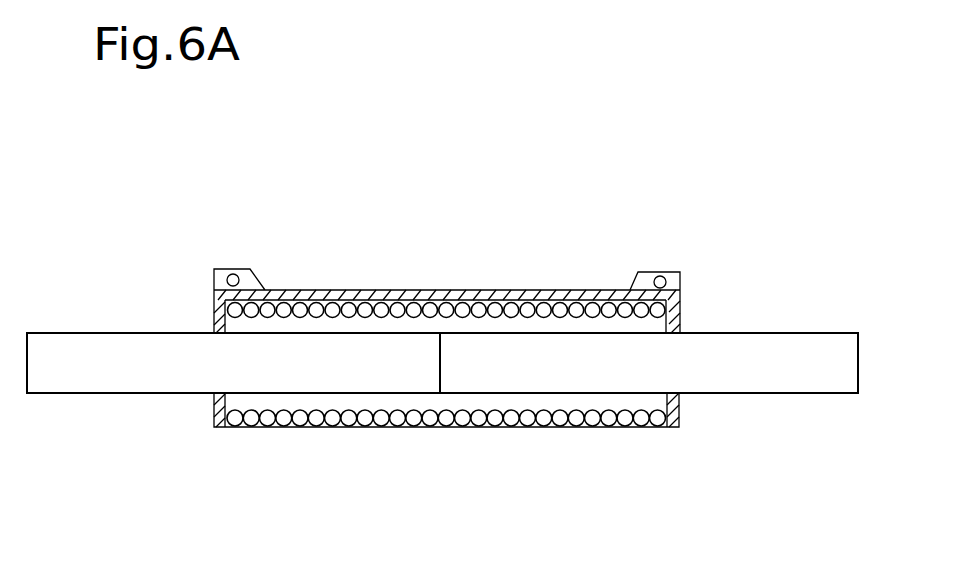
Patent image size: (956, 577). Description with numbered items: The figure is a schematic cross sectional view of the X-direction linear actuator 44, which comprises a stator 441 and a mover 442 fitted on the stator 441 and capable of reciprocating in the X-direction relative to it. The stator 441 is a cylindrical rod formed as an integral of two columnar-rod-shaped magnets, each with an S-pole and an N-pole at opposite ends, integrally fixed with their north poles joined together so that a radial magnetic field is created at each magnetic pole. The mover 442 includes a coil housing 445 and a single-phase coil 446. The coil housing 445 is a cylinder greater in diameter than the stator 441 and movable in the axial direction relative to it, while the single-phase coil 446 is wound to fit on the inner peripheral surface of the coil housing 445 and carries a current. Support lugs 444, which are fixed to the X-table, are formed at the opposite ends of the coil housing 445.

The X-direction linear actuator 44 is at (432, 336).
The stator 441 is at (783, 393).
The mover 442 is at (213, 428).
The support lug 444 is at (242, 270).
The coil housing 445 is at (330, 292).
The single-phase coil 446 is at (483, 424).